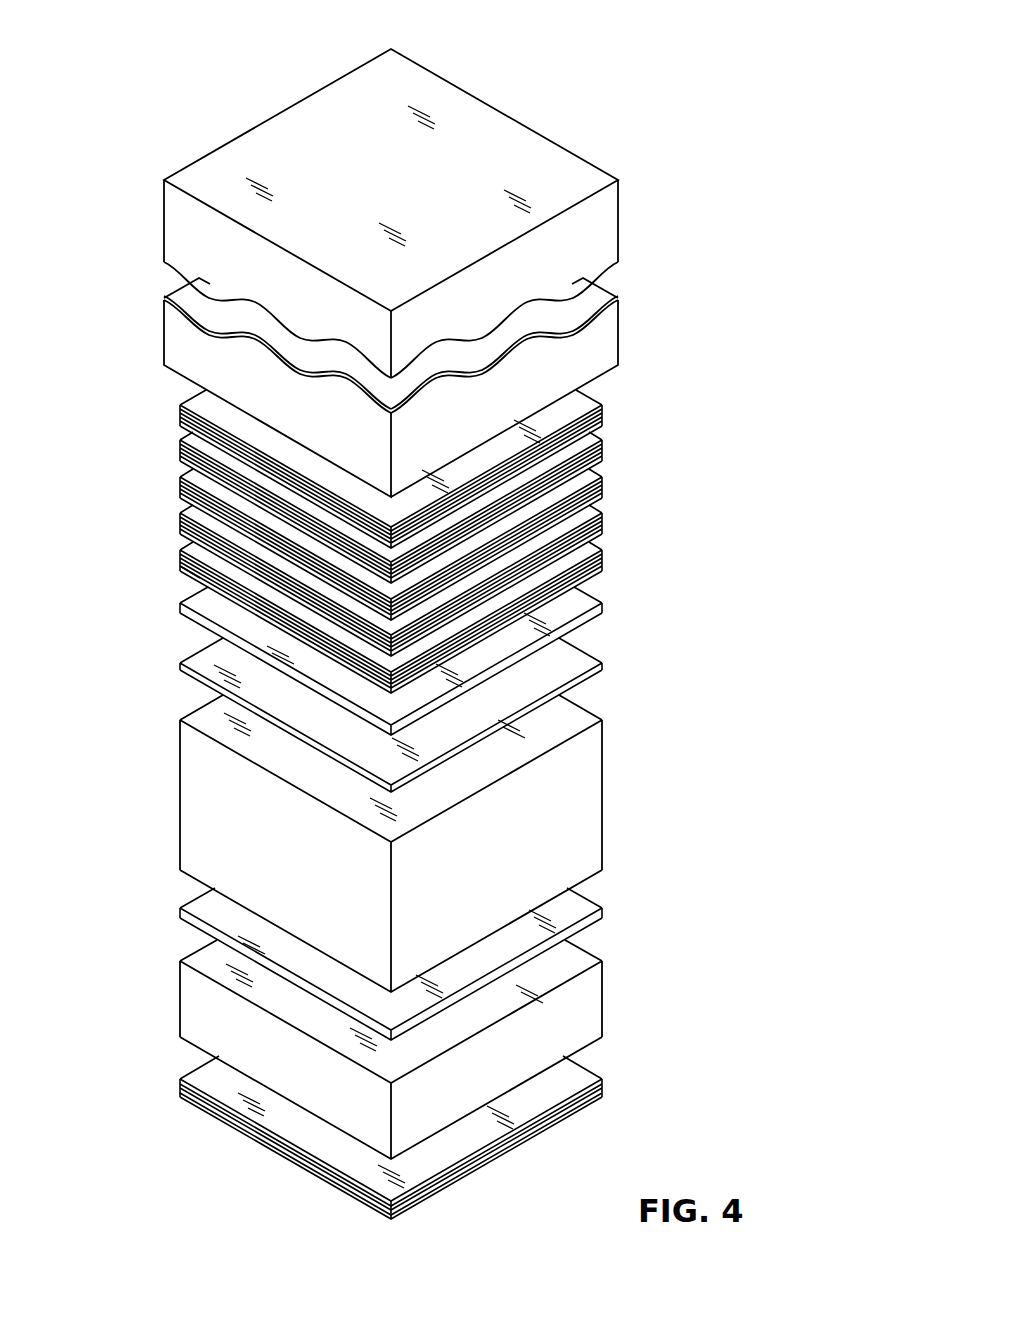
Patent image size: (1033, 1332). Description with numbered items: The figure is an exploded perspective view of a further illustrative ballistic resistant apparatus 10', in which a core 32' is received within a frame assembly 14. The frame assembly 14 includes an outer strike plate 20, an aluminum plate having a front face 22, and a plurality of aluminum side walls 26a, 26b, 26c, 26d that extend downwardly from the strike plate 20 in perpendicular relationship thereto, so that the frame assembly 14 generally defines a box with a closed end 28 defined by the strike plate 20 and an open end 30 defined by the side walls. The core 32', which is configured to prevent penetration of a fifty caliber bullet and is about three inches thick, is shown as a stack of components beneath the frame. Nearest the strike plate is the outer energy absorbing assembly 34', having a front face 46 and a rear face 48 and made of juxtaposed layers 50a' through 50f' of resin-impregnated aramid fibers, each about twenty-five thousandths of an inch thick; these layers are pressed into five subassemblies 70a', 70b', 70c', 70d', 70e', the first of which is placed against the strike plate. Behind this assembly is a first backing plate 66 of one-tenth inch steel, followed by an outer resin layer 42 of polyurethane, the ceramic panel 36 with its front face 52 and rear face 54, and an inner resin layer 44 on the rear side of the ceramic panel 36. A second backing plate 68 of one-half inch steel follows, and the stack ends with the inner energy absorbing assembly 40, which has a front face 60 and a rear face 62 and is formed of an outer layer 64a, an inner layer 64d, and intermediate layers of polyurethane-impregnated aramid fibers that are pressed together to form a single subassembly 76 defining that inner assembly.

The ballistic resistant apparatus 10' is at (438, 611).
The frame assembly 14 is at (505, 112).
The outer strike plate 20 is at (347, 107).
The front face 22 is at (408, 190).
The side wall 26a is at (603, 222).
The side wall 26b is at (180, 220).
The side wall 26c is at (183, 278).
The side wall 26d is at (603, 285).
The closed end 28 is at (218, 107).
The open end 30 is at (181, 383).
The core 32' is at (443, 785).
The outer energy absorbing assembly 34' is at (479, 530).
The ceramic panel 36 is at (603, 792).
The inner energy absorbing assembly 40 is at (208, 1115).
The outer resin layer 42 is at (595, 652).
The inner resin layer 44 is at (603, 911).
The front face 46 is at (230, 418).
The rear face 48 is at (189, 584).
The layer 50a' is at (454, 447).
The layer 50f' is at (467, 632).
The front face 52 is at (570, 728).
The rear face 54 is at (601, 881).
The front face 60 is at (562, 1093).
The rear face 62 is at (527, 1141).
The outer layer 64a is at (270, 1132).
The inner layer 64d is at (308, 1168).
The first backing plate 66 is at (598, 595).
The second backing plate 68 is at (603, 999).
The subassembly 70a' is at (431, 458).
The subassembly 70b' is at (451, 507).
The subassembly 70c' is at (450, 544).
The subassembly 70d' is at (451, 580).
The subassembly 70e' is at (442, 617).
The subassembly 76 is at (605, 1084).